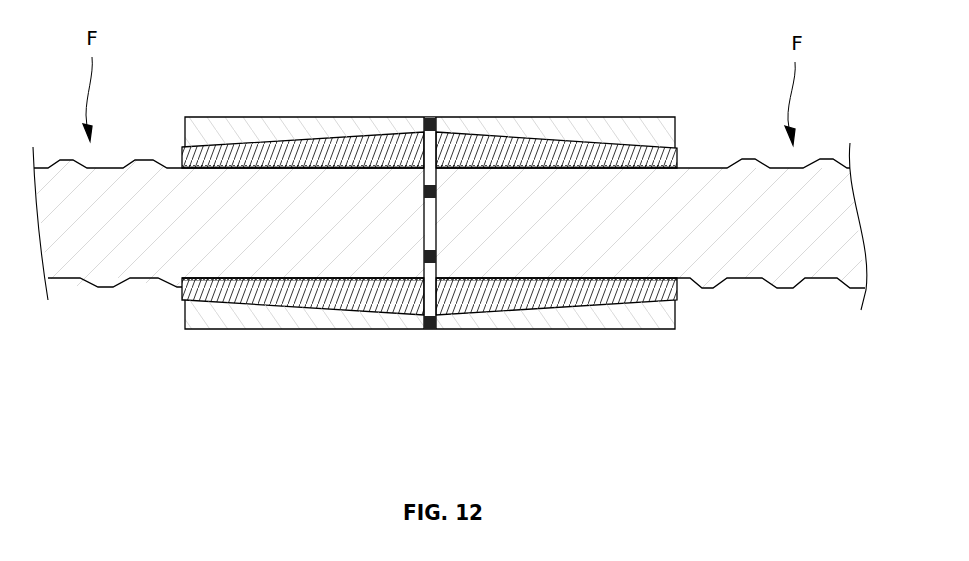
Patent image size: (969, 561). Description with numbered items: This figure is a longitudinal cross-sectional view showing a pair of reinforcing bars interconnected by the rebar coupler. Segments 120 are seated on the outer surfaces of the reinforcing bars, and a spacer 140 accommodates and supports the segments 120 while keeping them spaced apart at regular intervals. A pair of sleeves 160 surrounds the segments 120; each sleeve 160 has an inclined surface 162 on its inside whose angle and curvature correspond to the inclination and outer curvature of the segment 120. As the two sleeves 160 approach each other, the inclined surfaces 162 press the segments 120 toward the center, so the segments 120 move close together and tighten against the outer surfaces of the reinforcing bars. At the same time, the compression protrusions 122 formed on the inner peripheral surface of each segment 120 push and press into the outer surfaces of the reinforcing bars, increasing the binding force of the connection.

The segment 120 is at (538, 172).
The compression protrusion 122 is at (652, 165).
The spacer 140 is at (428, 117).
The sleeve 160 is at (615, 128).
The inclined surface 162 is at (538, 160).